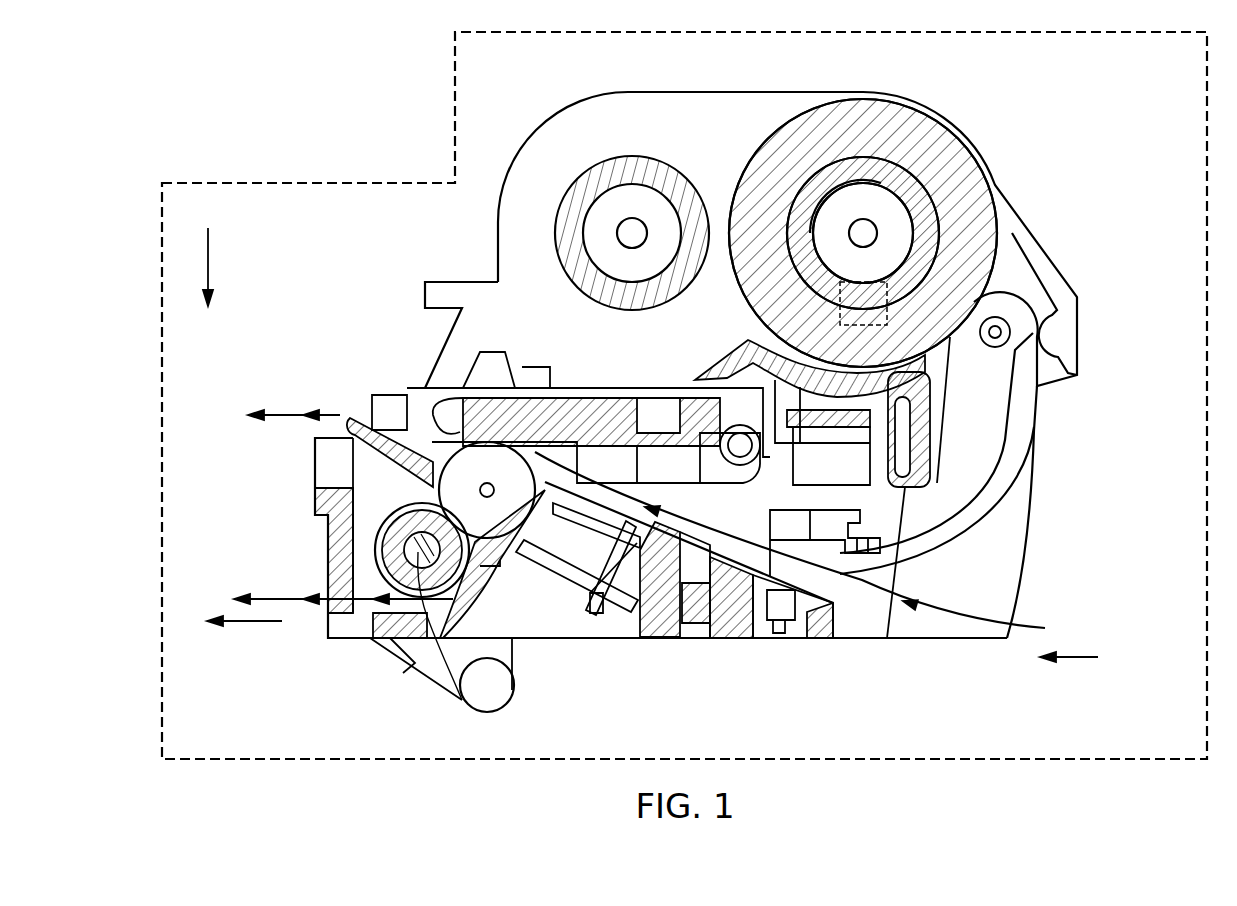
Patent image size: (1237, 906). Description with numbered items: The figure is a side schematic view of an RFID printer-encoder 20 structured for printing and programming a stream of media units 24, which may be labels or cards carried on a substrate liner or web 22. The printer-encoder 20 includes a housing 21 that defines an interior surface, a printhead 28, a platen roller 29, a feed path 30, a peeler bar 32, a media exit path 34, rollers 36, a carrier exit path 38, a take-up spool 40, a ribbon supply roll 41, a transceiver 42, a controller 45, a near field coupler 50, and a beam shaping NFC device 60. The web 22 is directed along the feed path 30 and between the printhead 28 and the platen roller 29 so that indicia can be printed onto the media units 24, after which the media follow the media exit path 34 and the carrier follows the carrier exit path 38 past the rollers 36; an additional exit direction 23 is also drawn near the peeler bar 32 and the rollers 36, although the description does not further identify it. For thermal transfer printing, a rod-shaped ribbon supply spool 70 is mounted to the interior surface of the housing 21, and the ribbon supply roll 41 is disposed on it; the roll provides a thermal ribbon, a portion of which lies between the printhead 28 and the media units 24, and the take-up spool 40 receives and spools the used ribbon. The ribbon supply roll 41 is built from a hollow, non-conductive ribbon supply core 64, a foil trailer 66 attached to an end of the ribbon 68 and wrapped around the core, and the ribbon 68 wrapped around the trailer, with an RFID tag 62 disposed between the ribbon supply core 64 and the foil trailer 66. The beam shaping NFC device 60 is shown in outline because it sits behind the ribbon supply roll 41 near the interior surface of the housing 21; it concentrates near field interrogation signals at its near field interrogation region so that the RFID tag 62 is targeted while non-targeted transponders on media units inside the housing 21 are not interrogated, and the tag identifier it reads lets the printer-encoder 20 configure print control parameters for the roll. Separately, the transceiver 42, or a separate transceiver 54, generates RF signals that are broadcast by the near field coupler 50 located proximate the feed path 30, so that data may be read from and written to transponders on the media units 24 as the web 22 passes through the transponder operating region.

The RFID printer-encoder 20 is at (306, 182).
The housing 21 is at (537, 125).
The web 22 is at (1050, 628).
The media exit direction 23 is at (276, 597).
The media units 24 is at (292, 412).
The printhead 28 is at (593, 400).
The platen roller 29 is at (475, 510).
The feed path 30 is at (1069, 669).
The peeler bar 32 is at (380, 418).
The media exit path 34 is at (208, 252).
The rollers 36 is at (462, 703).
The carrier exit path 38 is at (244, 634).
The take-up spool 40 is at (625, 165).
The ribbon supply roll 41 is at (968, 202).
The transceiver 42 is at (793, 557).
The controller 45 is at (880, 520).
The near field coupler 50 is at (597, 520).
The transceiver 54 is at (537, 557).
The beam shaping NFC device 60 is at (890, 300).
The RFID tag 62 is at (812, 207).
The ribbon supply core 64 is at (918, 117).
The foil trailer 66 is at (873, 185).
The ribbon 68 is at (825, 118).
The ribbon supply spool 70 is at (932, 180).